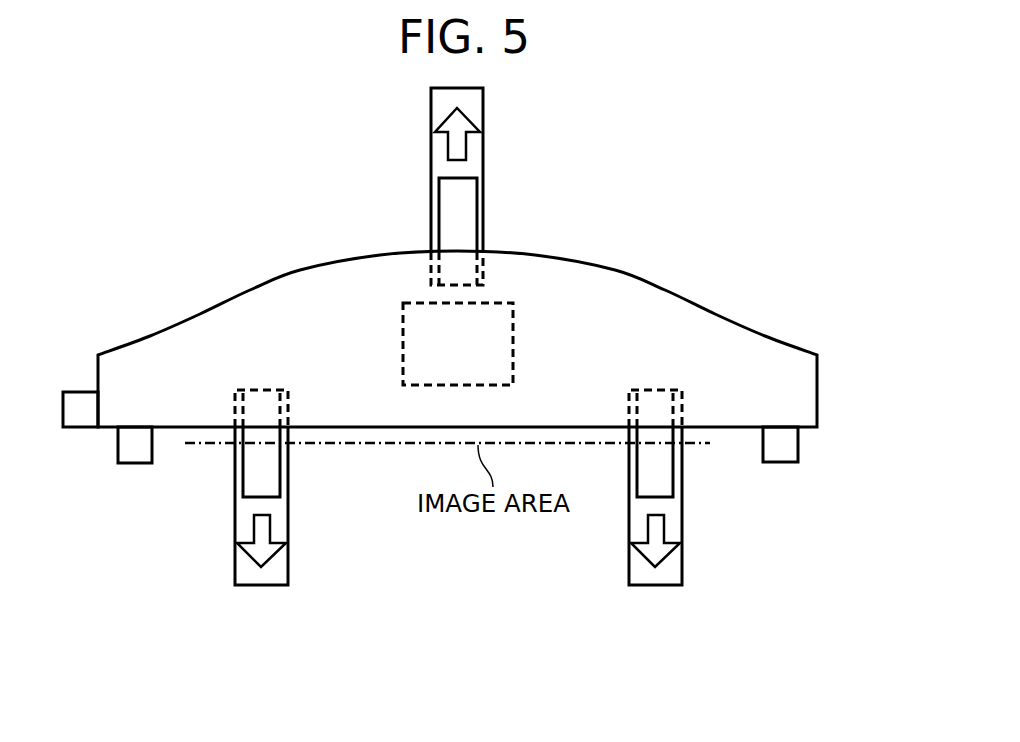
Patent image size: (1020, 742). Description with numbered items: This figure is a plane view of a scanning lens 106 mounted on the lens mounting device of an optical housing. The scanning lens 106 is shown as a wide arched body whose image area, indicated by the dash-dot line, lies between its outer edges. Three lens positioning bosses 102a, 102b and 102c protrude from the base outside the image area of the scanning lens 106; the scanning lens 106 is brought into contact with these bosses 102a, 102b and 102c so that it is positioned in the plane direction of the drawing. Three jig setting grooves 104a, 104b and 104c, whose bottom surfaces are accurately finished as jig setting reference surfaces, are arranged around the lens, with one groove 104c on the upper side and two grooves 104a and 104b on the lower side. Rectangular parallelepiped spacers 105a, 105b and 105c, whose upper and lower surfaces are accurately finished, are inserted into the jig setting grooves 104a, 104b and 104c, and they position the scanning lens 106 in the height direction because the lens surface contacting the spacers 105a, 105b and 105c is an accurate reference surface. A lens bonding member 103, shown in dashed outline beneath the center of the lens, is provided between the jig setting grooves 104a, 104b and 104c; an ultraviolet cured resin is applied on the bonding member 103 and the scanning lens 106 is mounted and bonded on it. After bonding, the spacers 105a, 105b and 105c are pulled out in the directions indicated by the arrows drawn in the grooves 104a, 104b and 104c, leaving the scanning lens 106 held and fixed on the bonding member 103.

The lens positioning boss 102a is at (788, 440).
The lens positioning boss 102b is at (133, 455).
The lens positioning boss 102c is at (77, 398).
The lens bonding member 103 is at (505, 325).
The jig setting groove 104a is at (672, 570).
The jig setting groove 104b is at (278, 570).
The jig setting groove 104c is at (477, 102).
The spacer 105a is at (665, 470).
The spacer 105b is at (273, 470).
The spacer 105c is at (468, 205).
The scanning lens 106 is at (645, 283).